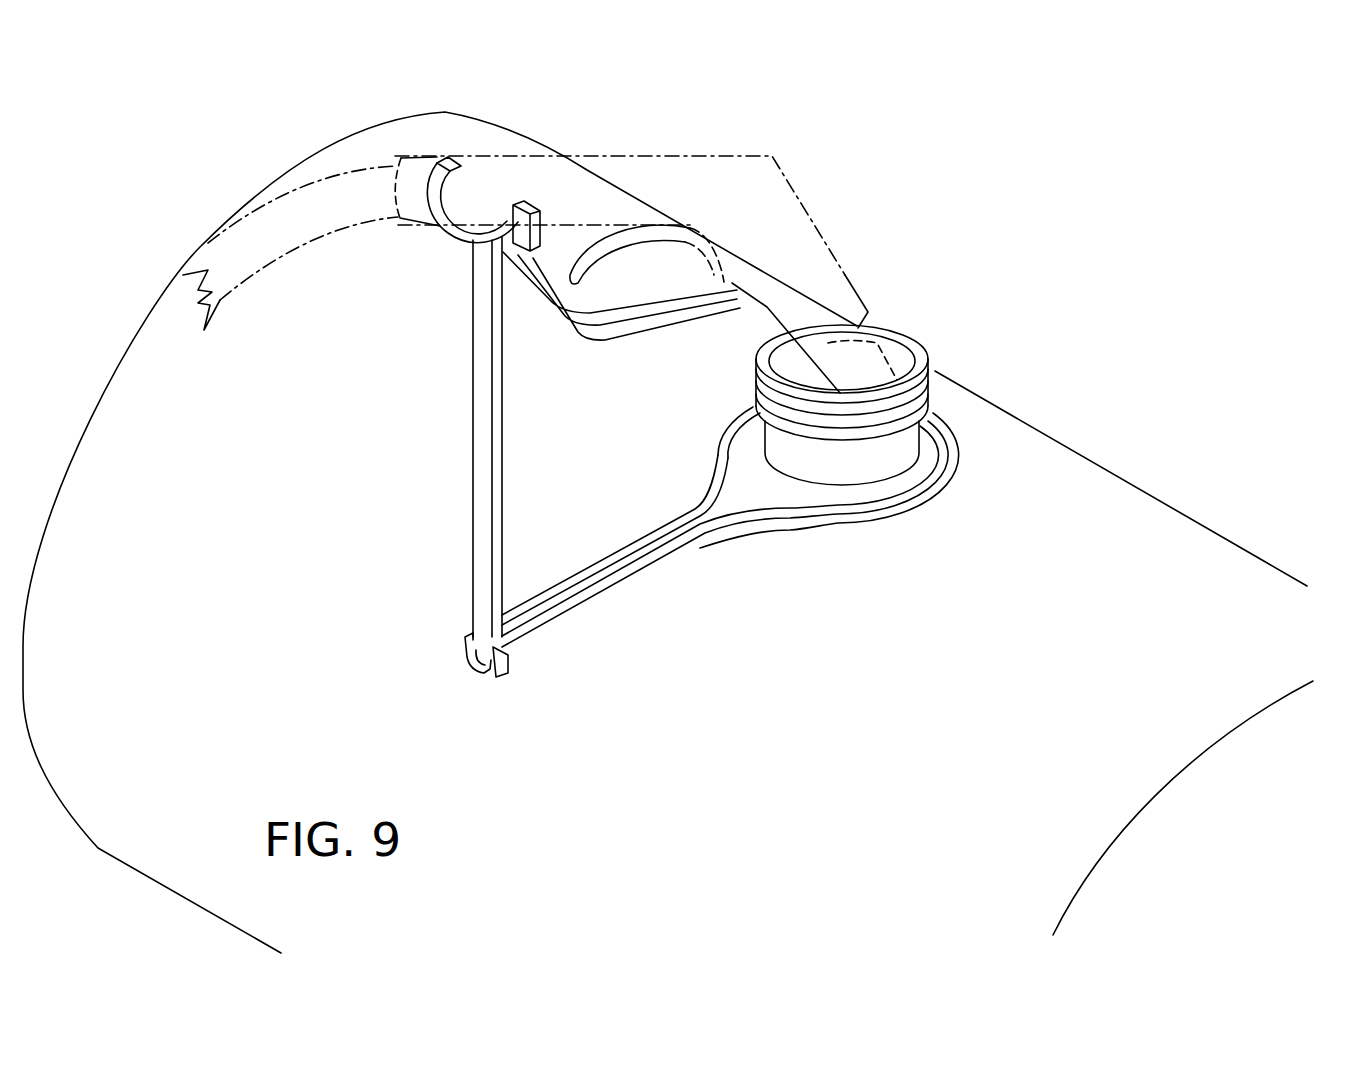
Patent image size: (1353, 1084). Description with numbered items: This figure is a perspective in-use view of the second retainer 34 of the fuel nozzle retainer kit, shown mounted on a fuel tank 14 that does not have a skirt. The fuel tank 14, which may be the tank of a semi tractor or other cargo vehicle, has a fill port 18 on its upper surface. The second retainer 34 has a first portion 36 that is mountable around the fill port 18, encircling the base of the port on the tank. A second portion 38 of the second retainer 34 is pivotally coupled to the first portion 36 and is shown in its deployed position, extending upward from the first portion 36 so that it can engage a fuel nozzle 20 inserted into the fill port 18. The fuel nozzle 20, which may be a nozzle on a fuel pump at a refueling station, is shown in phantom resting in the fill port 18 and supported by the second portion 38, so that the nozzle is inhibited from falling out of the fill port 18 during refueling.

The fuel tank 14 is at (1157, 502).
The fill port 18 is at (912, 350).
The fuel nozzle 20 is at (703, 158).
The second retainer 34 is at (970, 453).
The first portion 36 is at (945, 410).
The second portion 38 is at (505, 297).